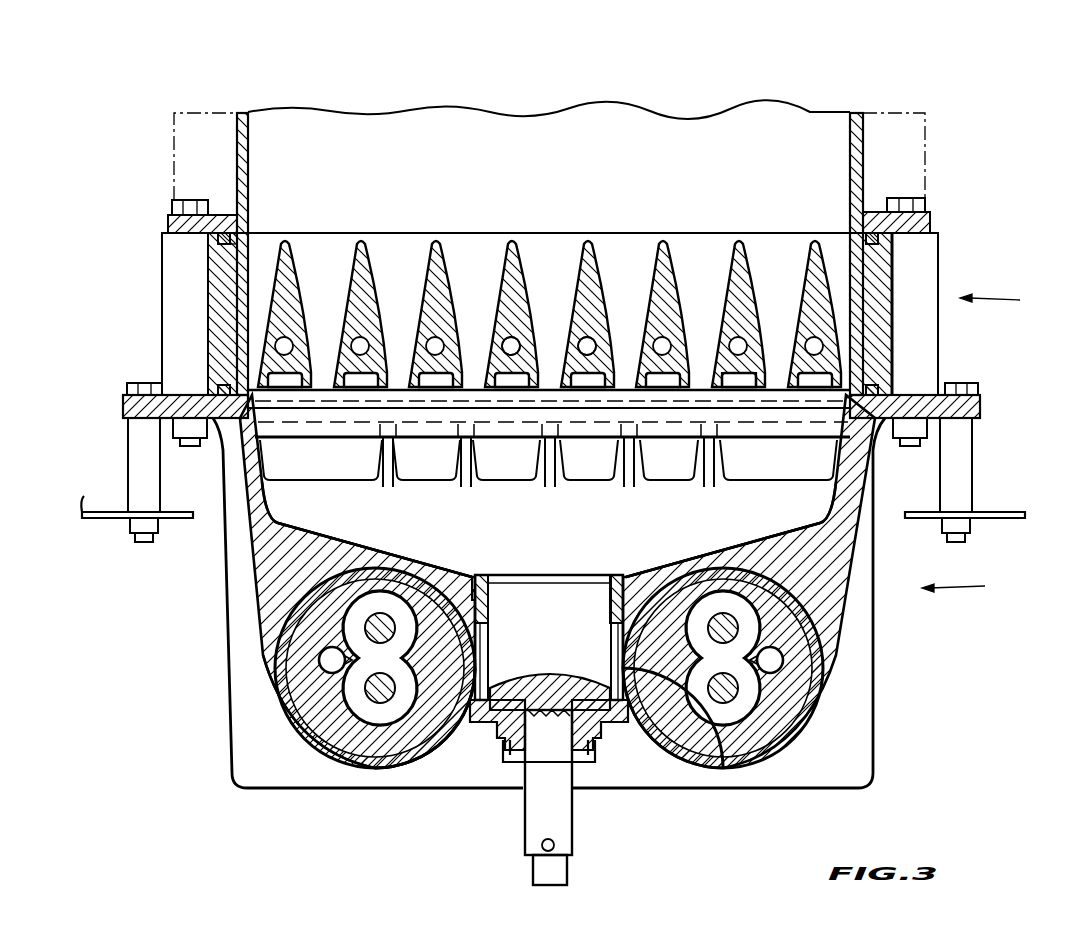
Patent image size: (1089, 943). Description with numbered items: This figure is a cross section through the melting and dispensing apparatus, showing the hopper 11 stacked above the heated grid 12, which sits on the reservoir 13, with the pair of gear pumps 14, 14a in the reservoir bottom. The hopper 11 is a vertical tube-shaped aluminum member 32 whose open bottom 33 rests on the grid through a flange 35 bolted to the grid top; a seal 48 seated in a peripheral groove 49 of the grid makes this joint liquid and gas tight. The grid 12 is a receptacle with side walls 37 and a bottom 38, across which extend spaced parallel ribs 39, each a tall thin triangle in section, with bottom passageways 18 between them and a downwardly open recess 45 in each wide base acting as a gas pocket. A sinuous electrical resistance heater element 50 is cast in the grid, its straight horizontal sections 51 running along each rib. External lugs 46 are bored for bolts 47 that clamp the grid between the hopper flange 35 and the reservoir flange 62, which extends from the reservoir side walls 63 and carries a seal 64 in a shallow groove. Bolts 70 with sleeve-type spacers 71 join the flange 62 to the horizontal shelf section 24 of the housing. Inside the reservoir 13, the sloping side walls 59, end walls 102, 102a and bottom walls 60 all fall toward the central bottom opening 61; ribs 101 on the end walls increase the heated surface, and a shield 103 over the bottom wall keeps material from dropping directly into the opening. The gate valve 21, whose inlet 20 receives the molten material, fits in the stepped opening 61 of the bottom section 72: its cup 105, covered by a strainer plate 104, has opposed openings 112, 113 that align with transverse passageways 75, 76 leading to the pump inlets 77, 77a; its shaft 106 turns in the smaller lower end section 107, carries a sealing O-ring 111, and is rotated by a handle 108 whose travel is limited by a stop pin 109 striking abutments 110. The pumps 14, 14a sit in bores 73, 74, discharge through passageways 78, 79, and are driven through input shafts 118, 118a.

The hopper 11 is at (942, 124).
The heated grid 12 is at (1006, 301).
The reservoir 13 is at (967, 584).
The gear pump 14 is at (800, 686).
The gear pump 14a is at (312, 738).
The bottom passageways 18 is at (388, 382).
The inlet 20 is at (630, 562).
The gate valve 21 is at (545, 630).
The horizontal shelf section 24 is at (100, 520).
The vertical tube-shaped aluminum member 32 is at (250, 152).
The bottom 33 is at (690, 236).
The flange 35 is at (922, 230).
The side walls 37 is at (215, 284).
The bottom 38 is at (882, 388).
The ribs 39 is at (510, 262).
The recess 45 is at (708, 378).
The lugs 46 is at (178, 320).
The bolts 47 is at (185, 200).
The seal 48 is at (231, 238).
The peripheral groove 49 is at (235, 240).
The electrical resistance heater element 50 is at (578, 342).
The straight horizontal sections 51 is at (510, 348).
The side walls 59 is at (270, 494).
The bottom walls 60 is at (358, 545).
The central bottom opening 61 is at (460, 575).
The flange 62 is at (124, 406).
The side walls 63 is at (248, 520).
The seal 64 is at (226, 388).
The bolts 70 is at (137, 386).
The sleeve-type spacer 71 is at (140, 462).
The bottom section 72 is at (255, 638).
The bore 73 is at (820, 655).
The bore 74 is at (273, 692).
The transverse passageway 75 is at (670, 560).
The transverse passageway 76 is at (446, 570).
The inlet 77 is at (652, 670).
The inlet 77a is at (422, 716).
The passageway 78 is at (772, 662).
The passageway 79 is at (330, 660).
The ribs 101 is at (530, 472).
The end wall 102 is at (608, 472).
The end wall 102a is at (648, 490).
The shield 103 is at (760, 435).
The strainer plate 104 is at (536, 562).
The cup 105 is at (580, 666).
The shaft 106 is at (530, 858).
The lower end section 107 is at (542, 748).
The handle 108 is at (555, 845).
The stop pin 109 is at (590, 766).
The abutments 110 is at (497, 752).
The sealing O-ring 111 is at (486, 730).
The opening 112 is at (612, 640).
The opening 113 is at (484, 656).
The input shaft 118 is at (727, 630).
The input shaft 118a is at (380, 692).